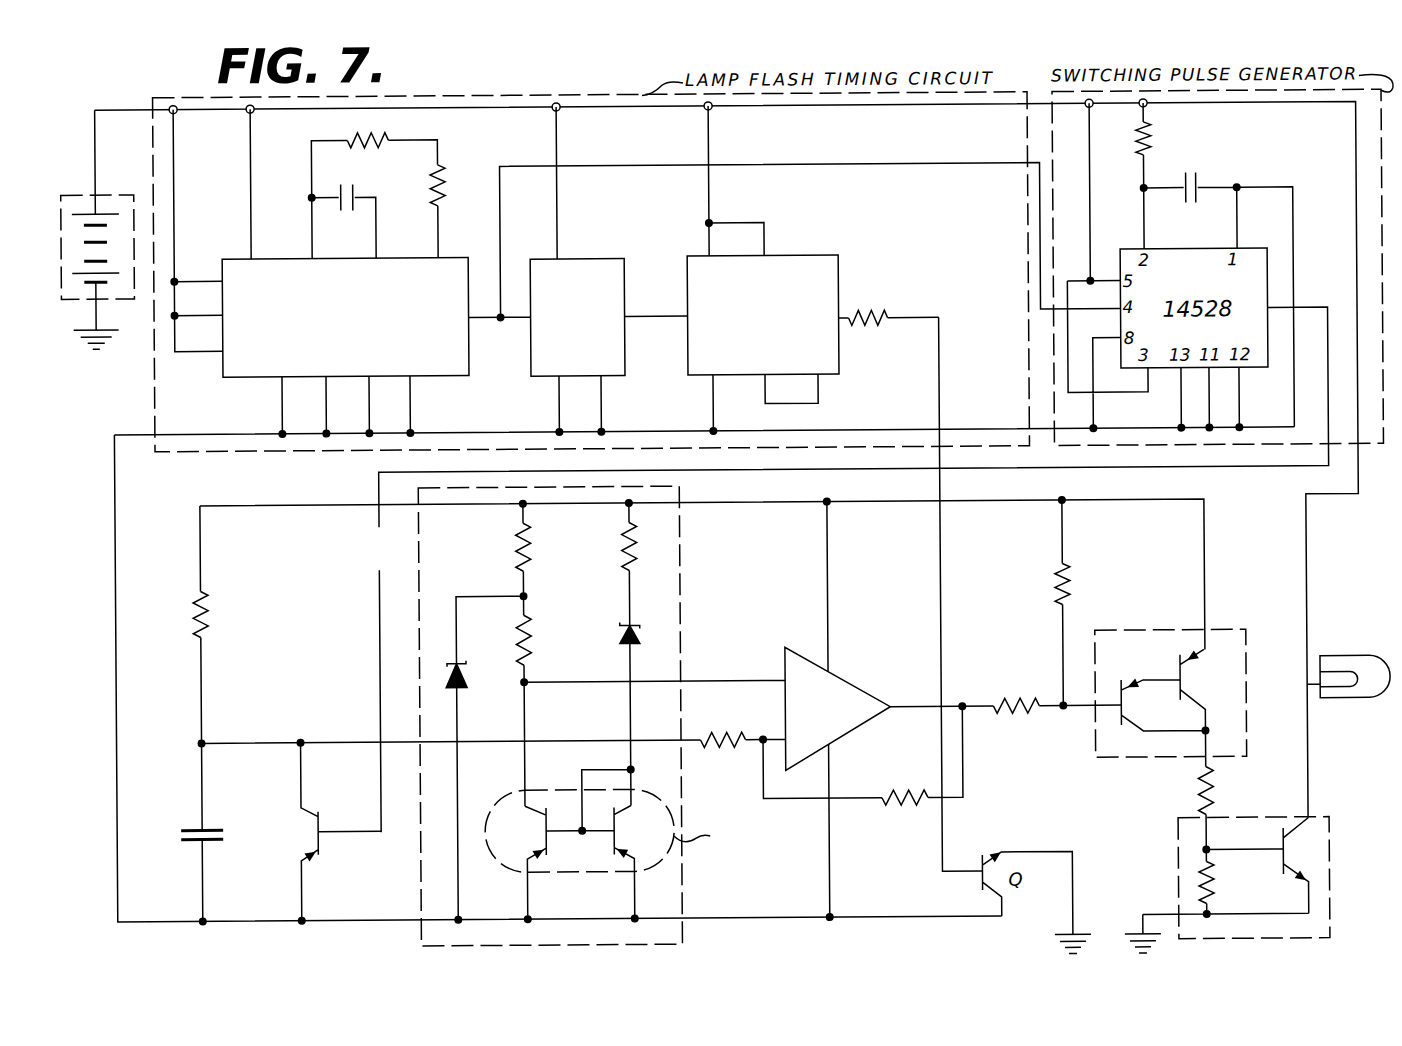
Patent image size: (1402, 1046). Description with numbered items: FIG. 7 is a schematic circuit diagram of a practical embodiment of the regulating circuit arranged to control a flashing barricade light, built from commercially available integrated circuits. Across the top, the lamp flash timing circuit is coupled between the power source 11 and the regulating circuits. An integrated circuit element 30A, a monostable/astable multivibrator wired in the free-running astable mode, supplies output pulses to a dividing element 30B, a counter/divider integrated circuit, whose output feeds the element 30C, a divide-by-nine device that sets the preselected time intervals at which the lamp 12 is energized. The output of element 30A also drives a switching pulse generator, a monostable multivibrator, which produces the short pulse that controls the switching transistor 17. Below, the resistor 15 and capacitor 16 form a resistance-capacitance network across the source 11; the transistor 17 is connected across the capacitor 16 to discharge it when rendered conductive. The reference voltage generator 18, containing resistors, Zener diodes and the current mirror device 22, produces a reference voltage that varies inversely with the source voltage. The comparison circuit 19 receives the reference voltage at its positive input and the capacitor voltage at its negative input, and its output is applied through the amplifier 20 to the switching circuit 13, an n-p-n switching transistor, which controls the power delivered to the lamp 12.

The power source 11 is at (80, 191).
The lamp 12 is at (1352, 660).
The switching circuit 13 is at (1178, 822).
The resistor 15 is at (207, 598).
The capacitor 16 is at (197, 826).
The switching transistor 17 is at (322, 829).
The reference voltage generator 18 is at (600, 715).
The comparison circuit 19 is at (862, 689).
The amplifier 20 is at (1224, 633).
The current mirror device 22 is at (556, 789).
The integrated circuit element 30A is at (452, 374).
The dividing element 30B is at (614, 375).
The element 30C is at (834, 375).